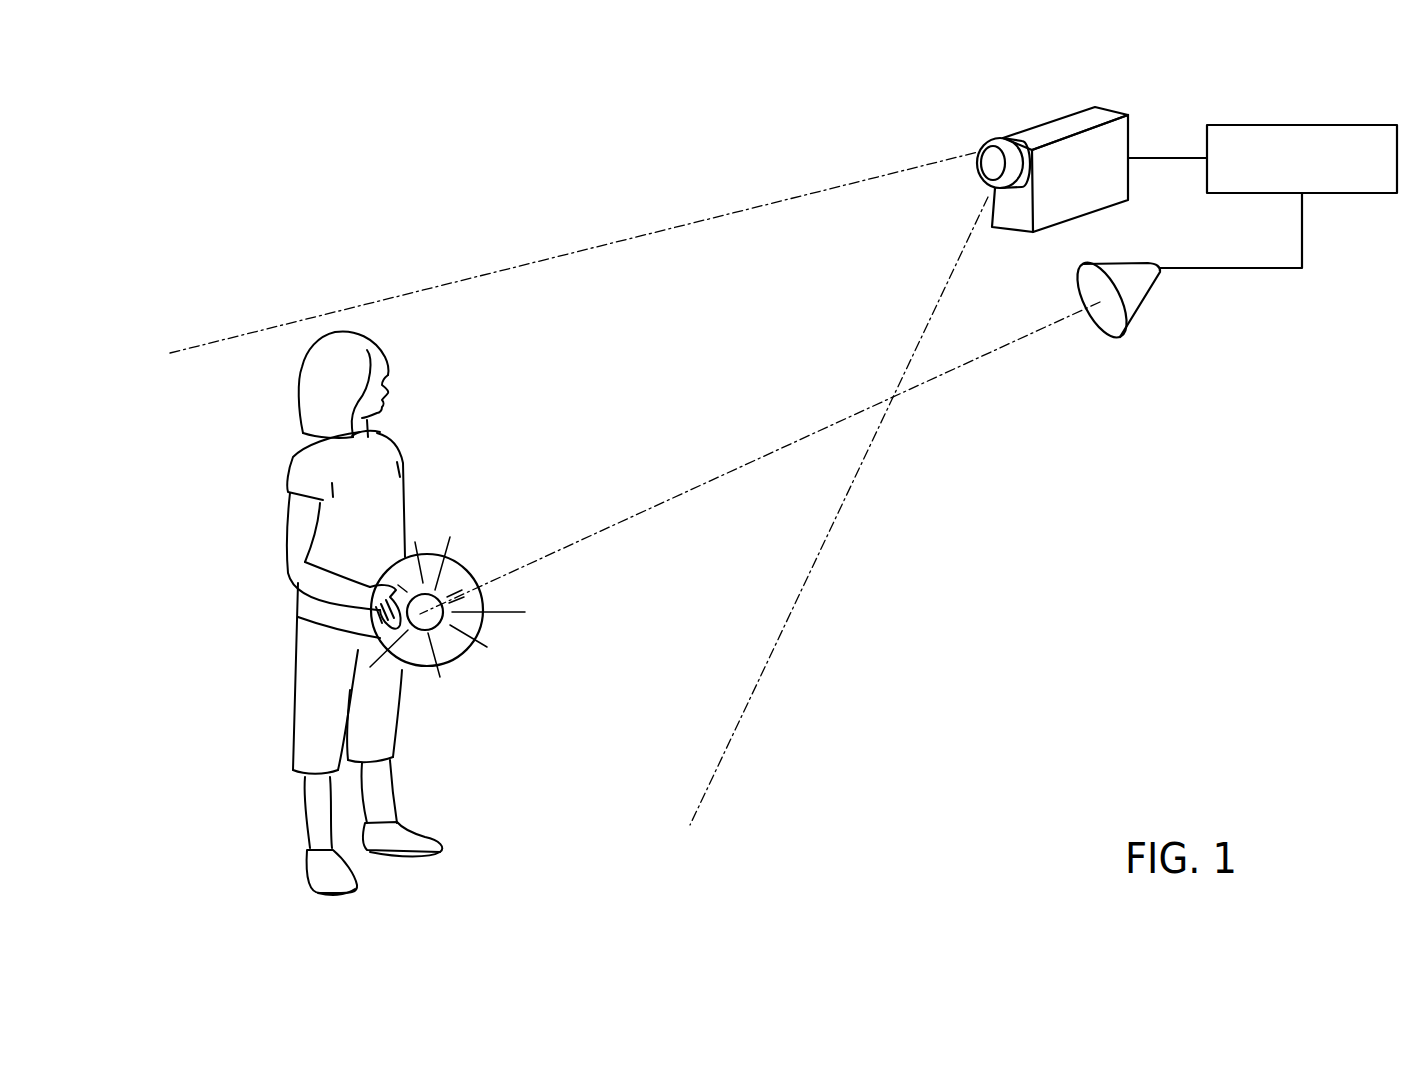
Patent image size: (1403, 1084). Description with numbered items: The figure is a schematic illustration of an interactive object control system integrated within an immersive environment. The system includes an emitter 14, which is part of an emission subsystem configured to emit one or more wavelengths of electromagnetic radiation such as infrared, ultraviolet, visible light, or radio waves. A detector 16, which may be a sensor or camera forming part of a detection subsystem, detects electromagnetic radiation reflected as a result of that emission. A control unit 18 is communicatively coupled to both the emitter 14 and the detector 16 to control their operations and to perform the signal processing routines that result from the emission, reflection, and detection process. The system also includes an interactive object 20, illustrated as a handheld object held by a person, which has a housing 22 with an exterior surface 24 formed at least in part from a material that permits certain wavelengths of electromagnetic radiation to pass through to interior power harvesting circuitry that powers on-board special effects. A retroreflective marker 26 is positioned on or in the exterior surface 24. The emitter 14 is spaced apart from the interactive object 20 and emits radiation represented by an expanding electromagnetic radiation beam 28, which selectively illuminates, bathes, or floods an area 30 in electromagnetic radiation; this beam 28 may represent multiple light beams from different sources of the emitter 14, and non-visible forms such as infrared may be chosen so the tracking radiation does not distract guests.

The emitter 14 is at (1045, 123).
The detector 16 is at (1140, 312).
The control unit 18 is at (1302, 123).
The interactive object 20 is at (298, 617).
The housing 22 is at (480, 604).
The exterior surface 24 is at (446, 589).
The retroreflective marker 26 is at (418, 632).
The electromagnetic radiation beam 28 is at (577, 247).
The area 30 is at (643, 882).